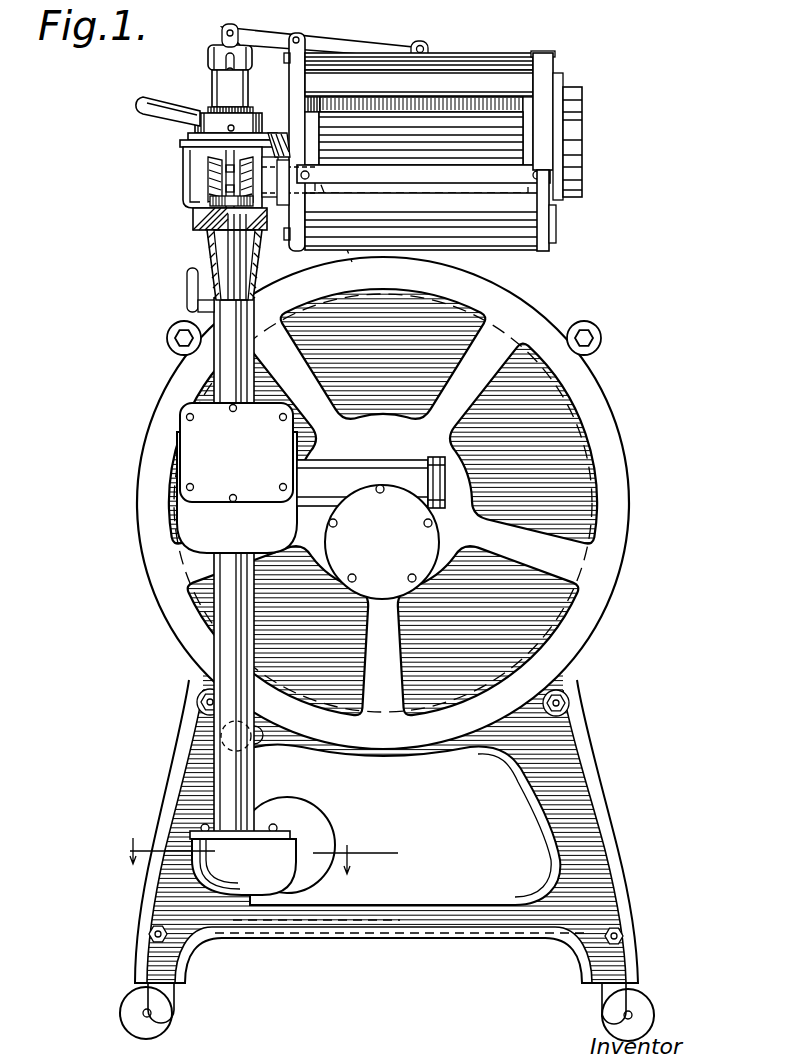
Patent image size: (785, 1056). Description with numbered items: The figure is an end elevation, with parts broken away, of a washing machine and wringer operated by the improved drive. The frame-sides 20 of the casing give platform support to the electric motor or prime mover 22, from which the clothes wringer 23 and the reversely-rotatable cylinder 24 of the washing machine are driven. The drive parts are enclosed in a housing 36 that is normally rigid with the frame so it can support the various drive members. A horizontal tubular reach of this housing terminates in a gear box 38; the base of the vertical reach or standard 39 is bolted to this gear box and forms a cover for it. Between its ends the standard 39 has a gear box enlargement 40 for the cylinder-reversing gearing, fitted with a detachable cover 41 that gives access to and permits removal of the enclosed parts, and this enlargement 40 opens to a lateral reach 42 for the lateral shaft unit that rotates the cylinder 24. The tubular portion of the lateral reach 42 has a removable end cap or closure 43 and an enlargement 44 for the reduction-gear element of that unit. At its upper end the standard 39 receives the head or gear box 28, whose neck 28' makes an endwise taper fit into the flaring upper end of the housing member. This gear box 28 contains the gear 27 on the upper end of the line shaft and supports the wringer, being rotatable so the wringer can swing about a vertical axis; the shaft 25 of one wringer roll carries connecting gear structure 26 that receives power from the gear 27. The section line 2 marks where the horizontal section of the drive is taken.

The section line 2— 2 is at (246, 856).
The frame-sides 20 is at (582, 693).
The electric motor or prime mover 22 is at (338, 847).
The clothes wringer 23 is at (585, 118).
The reversely-rotatable cylinder 24 is at (593, 443).
The shaft 25 is at (383, 441).
The connecting gear structure 26 is at (206, 171).
The gear 27 is at (195, 220).
The head or gear box 28 is at (209, 170).
The neck 28' is at (195, 257).
The housing 36 is at (210, 569).
The gear box 38 is at (243, 859).
The vertical reach or standard 39 is at (216, 667).
The gear box enlargement 40 is at (183, 504).
The detachable cover 41 is at (236, 452).
The lateral reach 42 is at (366, 452).
The removable end cap or closure 43 is at (447, 508).
The enlargement 44 is at (418, 576).